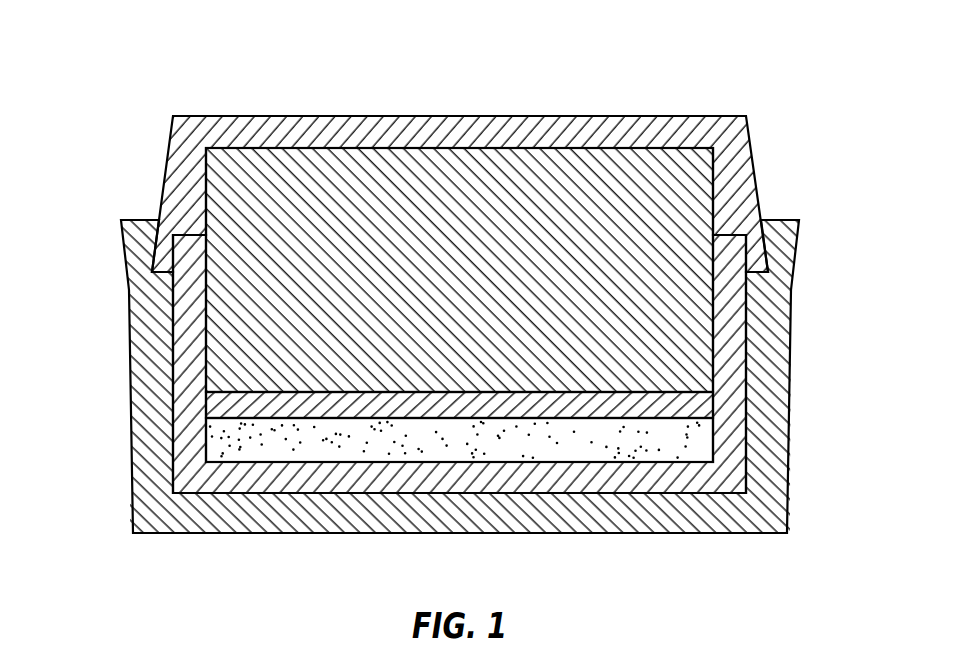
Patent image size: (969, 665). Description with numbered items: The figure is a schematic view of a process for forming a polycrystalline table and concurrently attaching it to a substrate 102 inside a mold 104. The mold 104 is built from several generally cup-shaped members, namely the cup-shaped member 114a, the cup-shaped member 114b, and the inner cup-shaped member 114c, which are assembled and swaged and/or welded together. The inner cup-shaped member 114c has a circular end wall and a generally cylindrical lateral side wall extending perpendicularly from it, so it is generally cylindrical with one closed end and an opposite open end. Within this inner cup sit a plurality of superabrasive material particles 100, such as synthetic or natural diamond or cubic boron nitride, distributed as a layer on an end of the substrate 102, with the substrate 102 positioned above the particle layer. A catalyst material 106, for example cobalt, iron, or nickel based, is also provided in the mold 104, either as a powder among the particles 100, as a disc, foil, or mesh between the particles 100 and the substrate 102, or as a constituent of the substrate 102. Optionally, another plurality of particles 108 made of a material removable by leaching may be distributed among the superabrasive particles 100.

The plurality of superabrasive material particles 100 is at (698, 444).
The substrate 102 is at (430, 187).
The mold 104 is at (164, 96).
The catalyst material 106 is at (700, 403).
The another plurality of particles 108 is at (554, 434).
The cup-shaped member 114a is at (187, 177).
The cup-shaped member 114b is at (145, 348).
The inner cup-shaped member 114c is at (342, 480).